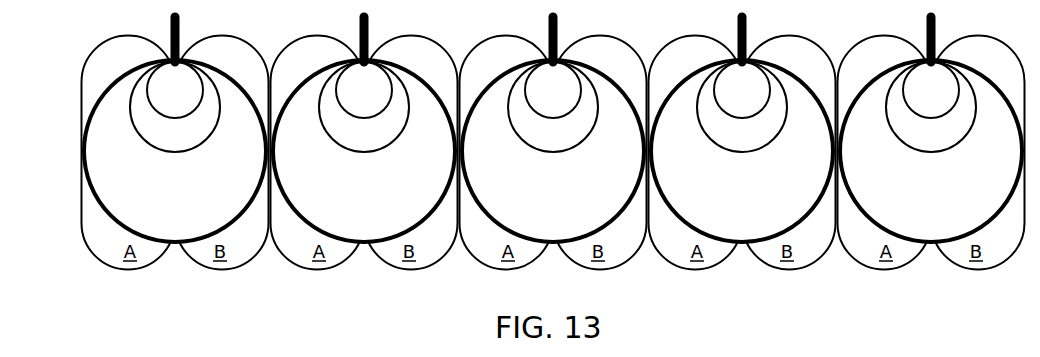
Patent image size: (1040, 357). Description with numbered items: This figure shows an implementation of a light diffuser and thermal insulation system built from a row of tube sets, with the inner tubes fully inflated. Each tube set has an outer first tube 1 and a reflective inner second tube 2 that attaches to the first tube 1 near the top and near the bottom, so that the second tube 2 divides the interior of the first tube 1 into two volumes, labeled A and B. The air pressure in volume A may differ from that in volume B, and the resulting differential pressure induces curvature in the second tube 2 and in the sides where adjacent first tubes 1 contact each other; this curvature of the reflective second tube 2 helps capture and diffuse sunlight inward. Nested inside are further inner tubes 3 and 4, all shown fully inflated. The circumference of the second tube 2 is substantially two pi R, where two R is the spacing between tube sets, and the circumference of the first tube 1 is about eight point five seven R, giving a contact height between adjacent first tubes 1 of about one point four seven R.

The first tube 1 is at (107, 265).
The second tube 2 is at (109, 213).
The inner tube 3 is at (145, 140).
The inner tube 4 is at (152, 107).